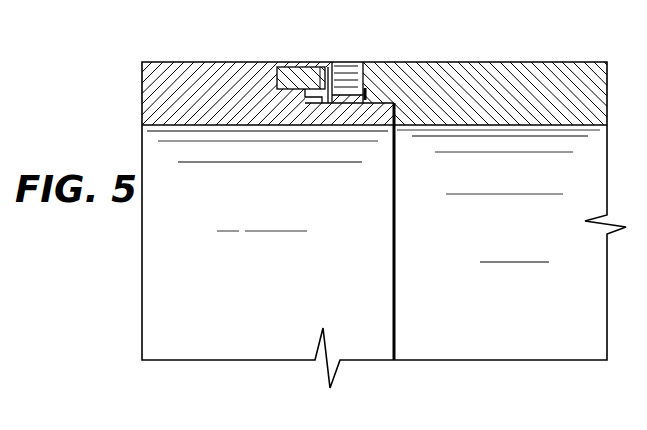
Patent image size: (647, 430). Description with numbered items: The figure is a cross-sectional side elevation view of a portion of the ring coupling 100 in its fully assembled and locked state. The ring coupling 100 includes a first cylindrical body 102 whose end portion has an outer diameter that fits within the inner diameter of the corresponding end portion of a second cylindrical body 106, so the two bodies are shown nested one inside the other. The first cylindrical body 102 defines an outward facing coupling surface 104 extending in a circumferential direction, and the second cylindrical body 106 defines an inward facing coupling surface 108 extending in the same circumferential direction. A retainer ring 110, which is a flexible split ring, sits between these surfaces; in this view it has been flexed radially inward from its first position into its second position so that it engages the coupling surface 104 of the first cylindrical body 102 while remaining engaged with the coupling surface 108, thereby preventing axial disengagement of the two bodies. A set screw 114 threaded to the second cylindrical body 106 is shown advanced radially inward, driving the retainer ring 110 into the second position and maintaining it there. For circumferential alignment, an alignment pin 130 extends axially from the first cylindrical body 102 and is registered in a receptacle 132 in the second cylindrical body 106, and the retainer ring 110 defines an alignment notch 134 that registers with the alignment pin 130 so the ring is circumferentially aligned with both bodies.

The ring coupling 100 is at (112, 275).
The first cylindrical body 102 is at (183, 78).
The outward facing coupling surface 104 is at (398, 108).
The second cylindrical body 106 is at (533, 73).
The inward facing coupling surface 108 is at (388, 101).
The retainer ring 110 is at (339, 97).
The set screw 114 is at (359, 63).
The alignment pin 130 is at (282, 82).
The receptacle 132 is at (305, 67).
The alignment notch 134 is at (323, 67).